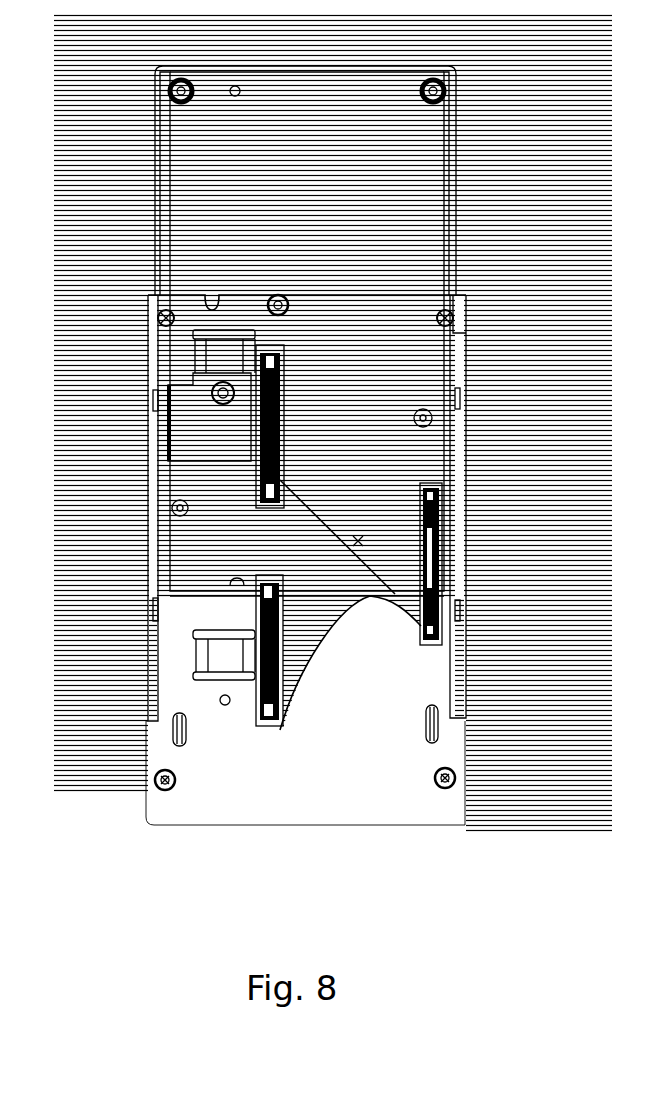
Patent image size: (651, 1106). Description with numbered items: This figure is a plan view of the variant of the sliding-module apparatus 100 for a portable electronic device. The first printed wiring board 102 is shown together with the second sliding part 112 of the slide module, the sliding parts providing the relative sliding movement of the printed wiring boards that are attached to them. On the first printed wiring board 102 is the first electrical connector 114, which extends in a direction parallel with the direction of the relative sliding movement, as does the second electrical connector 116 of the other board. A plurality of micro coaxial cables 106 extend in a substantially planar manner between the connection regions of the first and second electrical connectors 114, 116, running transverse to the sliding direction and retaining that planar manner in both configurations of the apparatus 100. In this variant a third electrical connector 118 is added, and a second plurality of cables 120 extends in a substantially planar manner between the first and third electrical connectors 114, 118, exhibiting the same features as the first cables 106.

The apparatus 100 is at (498, 103).
The first printed wiring board 102 is at (190, 541).
The micro coaxial cables 106 is at (413, 502).
The second sliding part 112 is at (167, 636).
The first electrical connector 114 is at (433, 548).
The second electrical connector 116 is at (250, 402).
The third electrical connector 118 is at (252, 686).
The second plurality of cables 120 is at (317, 607).